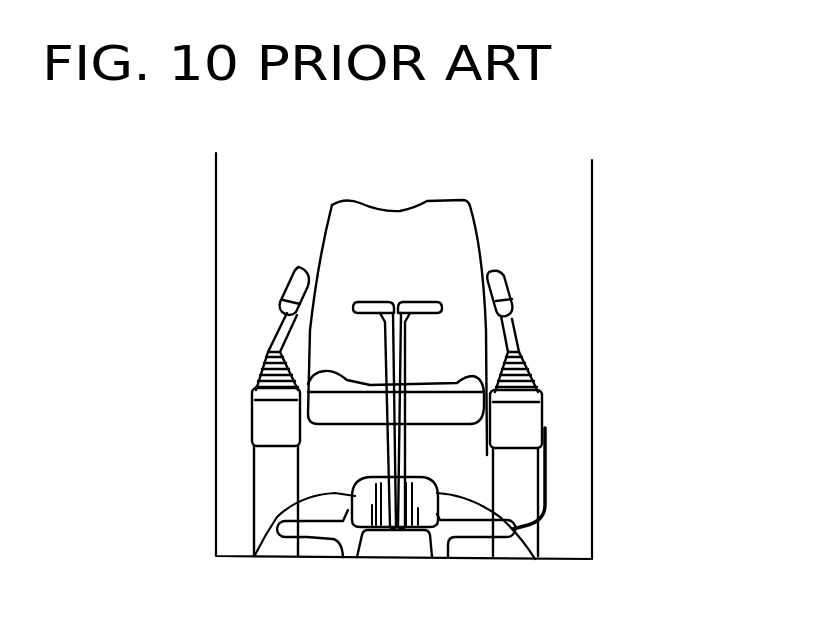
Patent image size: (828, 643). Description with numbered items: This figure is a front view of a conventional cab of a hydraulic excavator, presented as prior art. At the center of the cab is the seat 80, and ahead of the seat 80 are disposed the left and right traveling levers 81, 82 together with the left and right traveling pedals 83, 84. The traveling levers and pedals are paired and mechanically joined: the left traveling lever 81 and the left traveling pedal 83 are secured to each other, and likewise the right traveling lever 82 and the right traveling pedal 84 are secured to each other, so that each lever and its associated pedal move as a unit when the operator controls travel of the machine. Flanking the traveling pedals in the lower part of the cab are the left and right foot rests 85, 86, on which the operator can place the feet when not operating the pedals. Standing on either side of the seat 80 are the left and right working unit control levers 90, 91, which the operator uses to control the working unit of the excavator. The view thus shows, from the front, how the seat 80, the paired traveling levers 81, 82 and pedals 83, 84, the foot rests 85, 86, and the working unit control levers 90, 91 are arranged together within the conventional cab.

The seat 80 is at (400, 230).
The left traveling lever 81 is at (425, 307).
The right traveling lever 82 is at (366, 303).
The left traveling pedal 83 is at (537, 560).
The right traveling pedal 84 is at (255, 555).
The left foot rest 85 is at (468, 539).
The right foot rest 86 is at (307, 533).
The left working unit control lever 90 is at (503, 300).
The right working unit control lever 91 is at (297, 289).